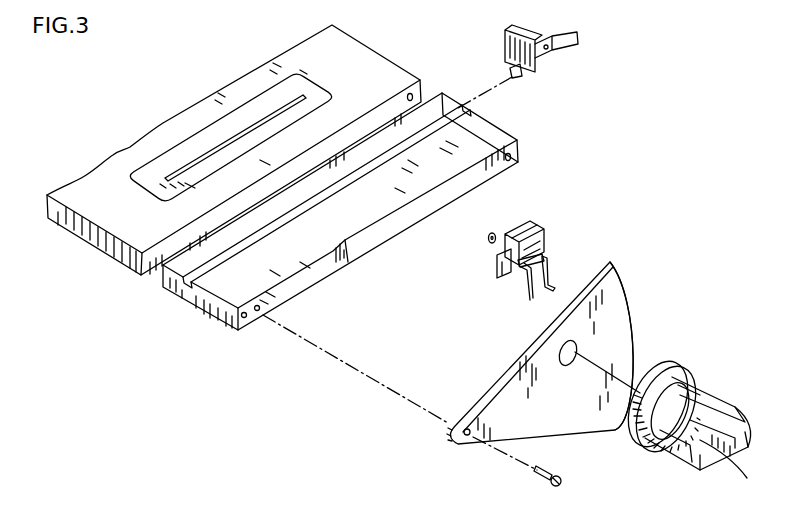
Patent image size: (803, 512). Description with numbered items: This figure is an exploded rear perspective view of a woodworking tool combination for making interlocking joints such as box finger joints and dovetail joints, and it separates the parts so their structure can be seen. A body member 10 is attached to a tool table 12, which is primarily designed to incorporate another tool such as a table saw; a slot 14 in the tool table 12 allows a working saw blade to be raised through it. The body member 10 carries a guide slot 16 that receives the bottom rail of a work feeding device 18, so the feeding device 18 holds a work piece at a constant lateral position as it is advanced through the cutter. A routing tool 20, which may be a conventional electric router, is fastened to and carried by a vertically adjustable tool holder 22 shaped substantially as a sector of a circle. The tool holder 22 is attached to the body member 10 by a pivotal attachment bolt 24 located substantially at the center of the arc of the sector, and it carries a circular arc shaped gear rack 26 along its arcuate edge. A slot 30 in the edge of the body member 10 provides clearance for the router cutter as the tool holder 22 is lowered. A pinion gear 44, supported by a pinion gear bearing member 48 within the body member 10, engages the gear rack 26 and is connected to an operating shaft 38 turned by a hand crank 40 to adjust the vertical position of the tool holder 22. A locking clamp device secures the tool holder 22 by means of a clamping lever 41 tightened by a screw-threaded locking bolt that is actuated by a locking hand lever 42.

The body member 10 is at (212, 307).
The tool table 12 is at (110, 175).
The slot 14 is at (238, 133).
The guide slot 16 is at (267, 222).
The work feeding device 18 is at (505, 30).
The routing tool 20 is at (707, 397).
The tool holder 22 is at (518, 362).
The pivotal attachment bolt 24 is at (553, 472).
The gear rack 26 is at (630, 333).
The slot 30 is at (343, 260).
The operating shaft 38 is at (538, 255).
The hand crank 40 is at (552, 283).
The clamping lever 41 is at (505, 267).
The locking hand lever 42 is at (527, 287).
The pinion gear 44 is at (488, 238).
The pinion gear bearing member 48 is at (528, 223).